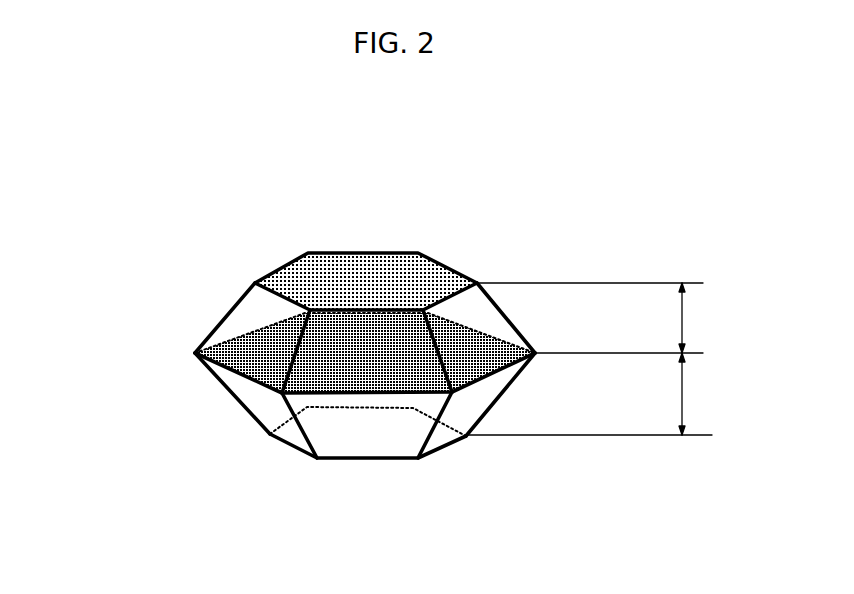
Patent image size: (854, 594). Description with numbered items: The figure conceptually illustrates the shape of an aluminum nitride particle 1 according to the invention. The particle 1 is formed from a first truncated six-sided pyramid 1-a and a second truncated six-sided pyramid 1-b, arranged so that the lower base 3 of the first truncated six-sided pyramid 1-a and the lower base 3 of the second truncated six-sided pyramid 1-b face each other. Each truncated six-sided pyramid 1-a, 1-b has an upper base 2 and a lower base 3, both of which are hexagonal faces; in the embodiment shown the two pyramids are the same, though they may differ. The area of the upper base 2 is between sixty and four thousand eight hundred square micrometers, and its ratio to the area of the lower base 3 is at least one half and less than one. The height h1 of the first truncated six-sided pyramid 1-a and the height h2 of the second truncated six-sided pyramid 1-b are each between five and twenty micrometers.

The aluminum nitride particle 1 is at (345, 250).
The first truncated six-sided pyramid 1-a is at (233, 305).
The second truncated six-sided pyramid 1-b is at (296, 420).
The upper base 2 is at (445, 281).
The lower base 3 is at (485, 340).
The height of the first truncated six-sided pyramid h1 is at (598, 318).
The height of the second truncated six-sided pyramid h2 is at (595, 394).